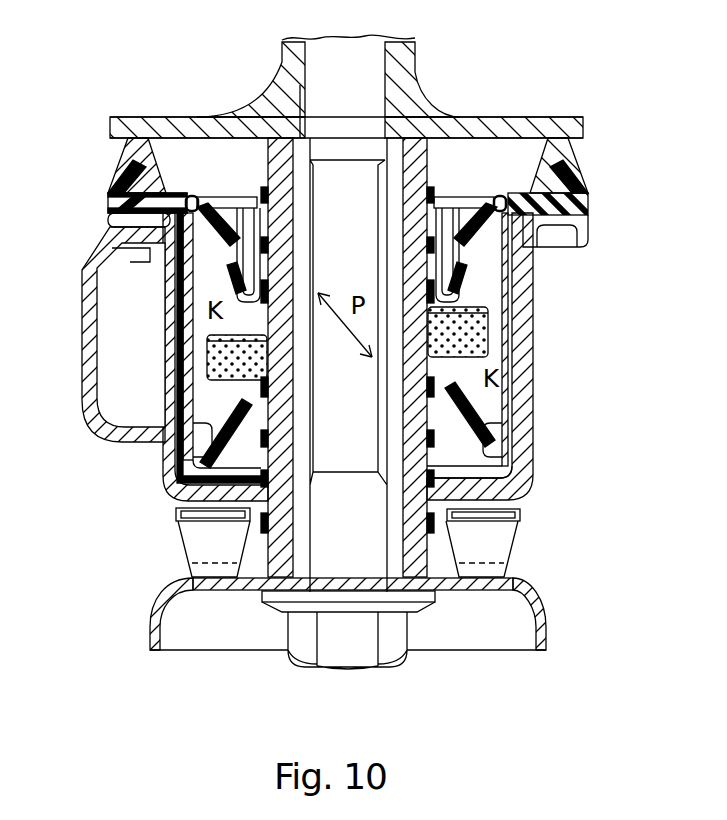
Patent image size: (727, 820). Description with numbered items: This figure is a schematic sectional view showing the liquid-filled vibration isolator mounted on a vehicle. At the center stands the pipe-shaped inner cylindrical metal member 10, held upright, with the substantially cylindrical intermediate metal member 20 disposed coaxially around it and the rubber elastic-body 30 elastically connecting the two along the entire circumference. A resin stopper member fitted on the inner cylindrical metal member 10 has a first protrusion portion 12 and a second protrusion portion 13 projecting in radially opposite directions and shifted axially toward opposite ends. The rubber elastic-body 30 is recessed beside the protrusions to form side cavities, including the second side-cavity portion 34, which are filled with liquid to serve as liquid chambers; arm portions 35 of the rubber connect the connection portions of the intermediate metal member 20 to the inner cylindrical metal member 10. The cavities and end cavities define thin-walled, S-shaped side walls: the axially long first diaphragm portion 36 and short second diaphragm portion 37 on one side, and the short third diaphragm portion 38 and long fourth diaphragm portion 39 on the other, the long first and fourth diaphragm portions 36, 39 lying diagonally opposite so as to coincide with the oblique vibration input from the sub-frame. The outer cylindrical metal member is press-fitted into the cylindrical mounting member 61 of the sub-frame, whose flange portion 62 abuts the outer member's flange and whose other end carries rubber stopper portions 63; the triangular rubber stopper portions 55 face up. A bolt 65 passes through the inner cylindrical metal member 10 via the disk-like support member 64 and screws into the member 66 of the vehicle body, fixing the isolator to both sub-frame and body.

The inner cylindrical metal member 10 is at (428, 164).
The first protrusion portion 12 is at (222, 346).
The second protrusion portion 13 is at (478, 326).
The intermediate metal member 20 is at (195, 195).
The rubber elastic-body 30 is at (187, 236).
The second side-cavity portion 34 is at (210, 248).
The arm portions 35 is at (483, 250).
The first diaphragm portion 36 is at (203, 288).
The second diaphragm portion 37 is at (232, 398).
The third diaphragm portion 38 is at (467, 290).
The fourth diaphragm portion 39 is at (477, 414).
The rubber stopper portions 55 is at (580, 175).
The cylindrical mounting member 61 is at (162, 473).
The flange portion 62 is at (112, 243).
The rubber stopper portions 63 is at (180, 540).
The disk-like support member 64 is at (152, 612).
The bolt 65 is at (376, 668).
The member of the vehicle body 66 is at (505, 117).